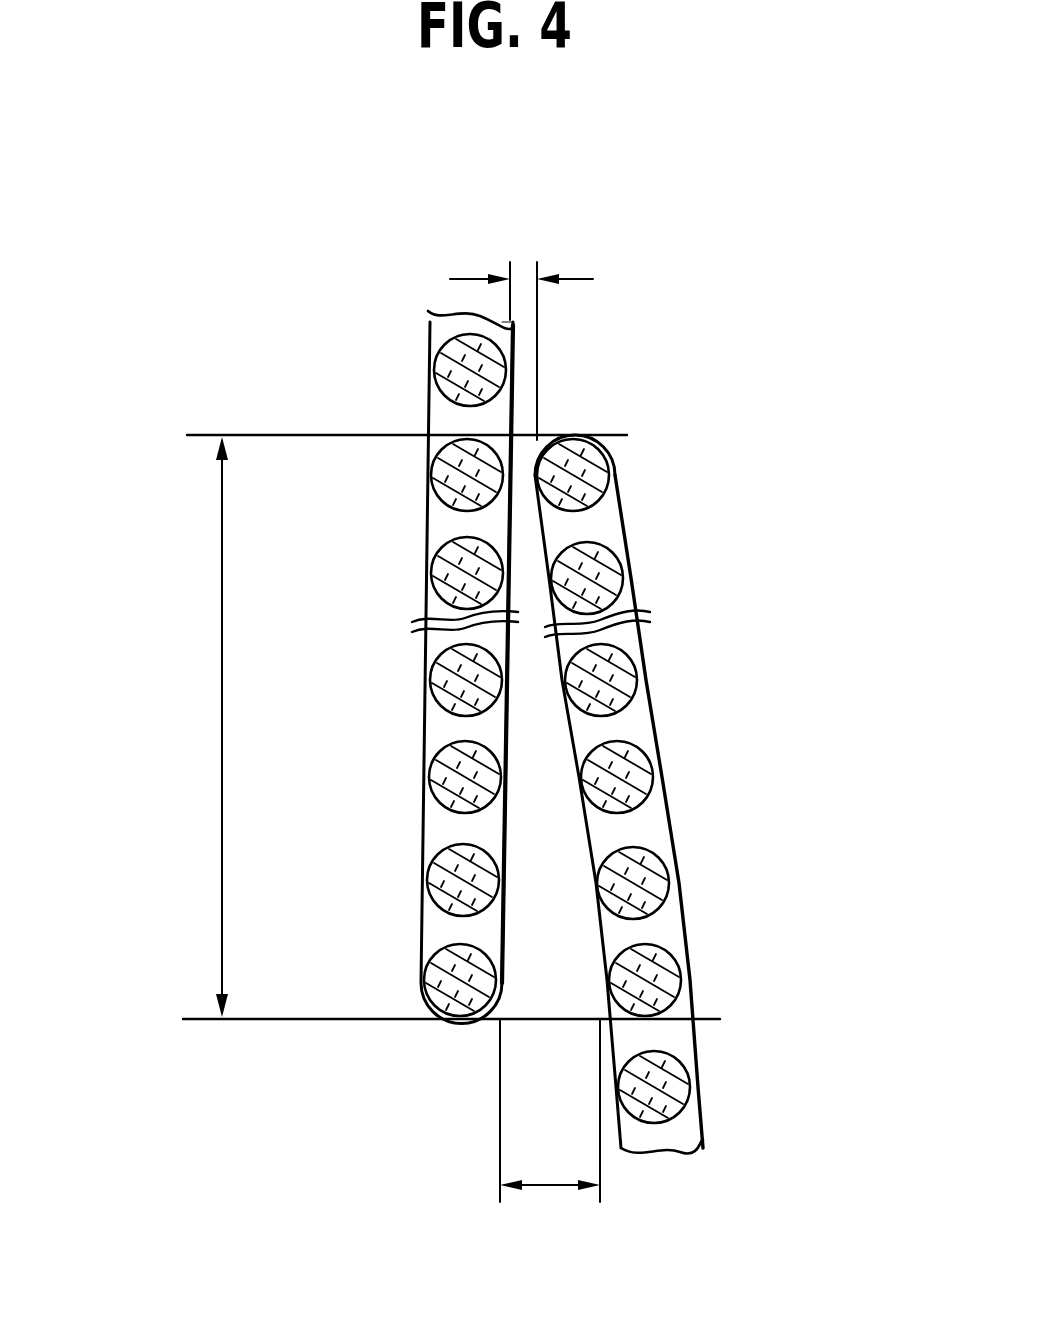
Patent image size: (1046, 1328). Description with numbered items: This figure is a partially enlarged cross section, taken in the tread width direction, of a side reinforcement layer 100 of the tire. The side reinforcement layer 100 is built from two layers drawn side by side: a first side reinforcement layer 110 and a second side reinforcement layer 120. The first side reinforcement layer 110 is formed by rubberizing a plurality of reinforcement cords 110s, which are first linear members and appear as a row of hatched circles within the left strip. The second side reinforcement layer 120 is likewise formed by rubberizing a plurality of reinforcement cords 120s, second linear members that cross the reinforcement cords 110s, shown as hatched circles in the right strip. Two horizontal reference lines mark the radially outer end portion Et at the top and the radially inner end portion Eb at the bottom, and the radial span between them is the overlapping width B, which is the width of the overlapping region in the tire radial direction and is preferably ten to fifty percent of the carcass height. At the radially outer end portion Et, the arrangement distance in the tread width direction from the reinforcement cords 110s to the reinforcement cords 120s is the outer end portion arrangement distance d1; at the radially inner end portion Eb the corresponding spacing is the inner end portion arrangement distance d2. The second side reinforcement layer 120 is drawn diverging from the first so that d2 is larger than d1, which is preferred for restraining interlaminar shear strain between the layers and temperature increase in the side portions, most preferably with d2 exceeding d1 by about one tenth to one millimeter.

The side reinforcement layer 100 is at (680, 358).
The first side reinforcement layer 110 is at (385, 667).
The reinforcement cords 110s is at (445, 478).
The second side reinforcement layer 120 is at (693, 794).
The reinforcement cords 120s is at (617, 474).
The radially outer end portion Et is at (200, 435).
The radially inner end portion Eb is at (202, 1019).
The overlapping width B is at (206, 727).
The outer end portion arrangement distance d1 is at (521, 325).
The inner end portion arrangement distance d2 is at (550, 1130).